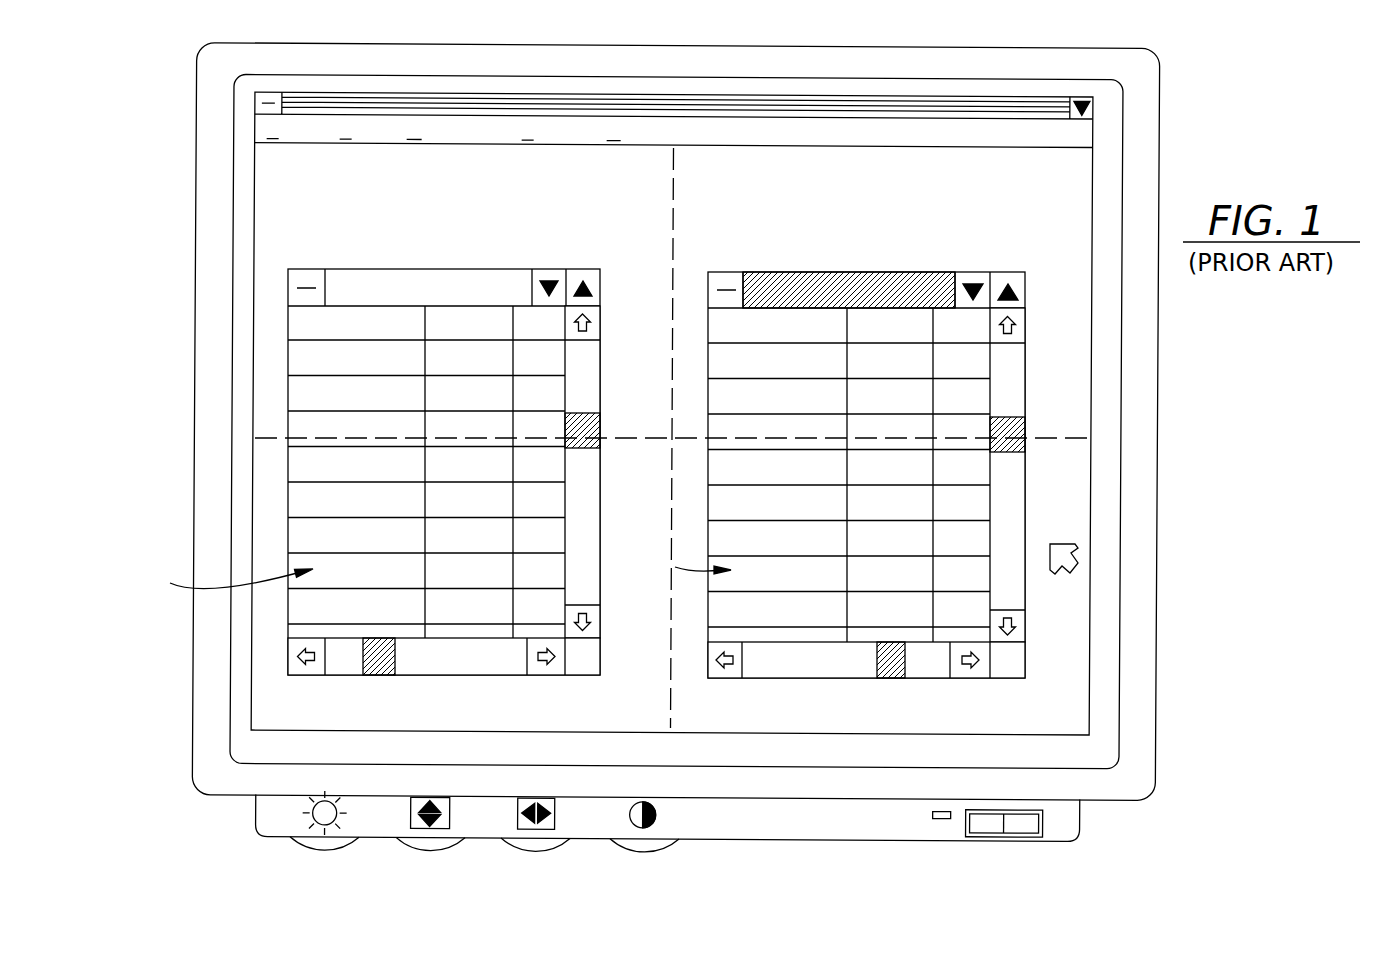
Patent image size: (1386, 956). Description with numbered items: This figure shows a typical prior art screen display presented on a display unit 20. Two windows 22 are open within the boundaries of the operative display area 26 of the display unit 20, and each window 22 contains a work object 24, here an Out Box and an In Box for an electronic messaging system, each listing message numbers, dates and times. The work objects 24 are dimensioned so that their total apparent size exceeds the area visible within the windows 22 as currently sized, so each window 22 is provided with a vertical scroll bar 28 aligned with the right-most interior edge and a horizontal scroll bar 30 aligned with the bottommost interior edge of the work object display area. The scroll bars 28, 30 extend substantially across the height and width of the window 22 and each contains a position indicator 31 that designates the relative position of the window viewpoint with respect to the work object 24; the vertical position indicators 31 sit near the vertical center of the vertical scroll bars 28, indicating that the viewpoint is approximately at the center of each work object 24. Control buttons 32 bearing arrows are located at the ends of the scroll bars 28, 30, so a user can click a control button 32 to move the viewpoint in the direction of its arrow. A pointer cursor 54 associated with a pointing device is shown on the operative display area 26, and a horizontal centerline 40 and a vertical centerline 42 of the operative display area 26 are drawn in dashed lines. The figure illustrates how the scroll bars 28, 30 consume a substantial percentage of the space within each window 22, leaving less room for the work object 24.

The display unit 20 is at (1145, 695).
The windows 22 is at (445, 268).
The work object 24 is at (432, 575).
The operative display area 26 is at (1092, 405).
The vertical scroll bar 28 is at (592, 478).
The horizontal scroll bar 30 is at (458, 666).
The position indicator 31 is at (601, 428).
The control buttons 32 is at (603, 320).
The centerline 40 is at (1080, 440).
The centerline 42 is at (670, 692).
The pointer cursor 54 is at (1072, 560).